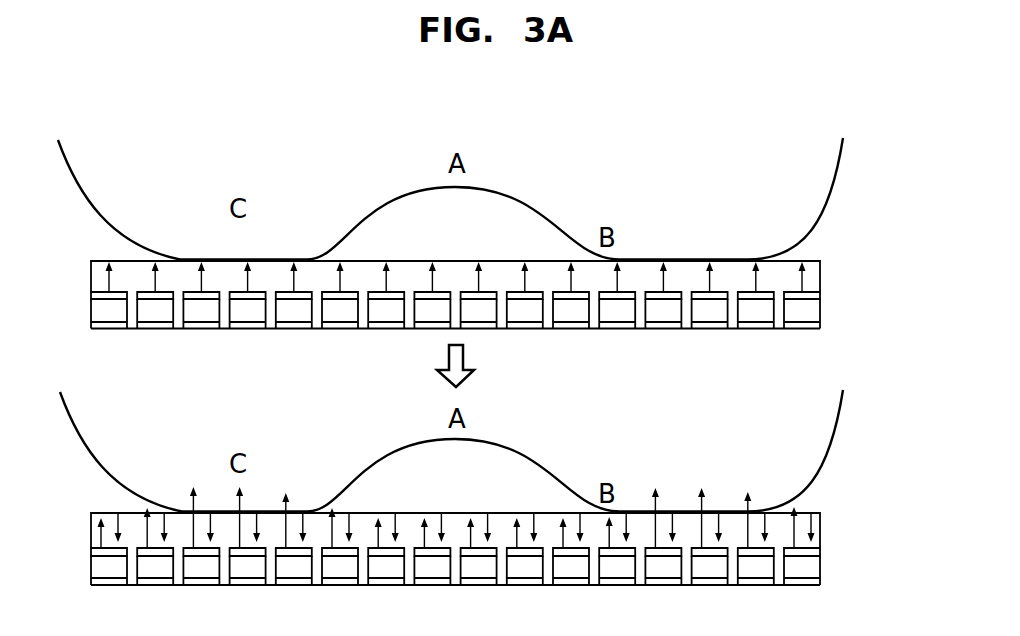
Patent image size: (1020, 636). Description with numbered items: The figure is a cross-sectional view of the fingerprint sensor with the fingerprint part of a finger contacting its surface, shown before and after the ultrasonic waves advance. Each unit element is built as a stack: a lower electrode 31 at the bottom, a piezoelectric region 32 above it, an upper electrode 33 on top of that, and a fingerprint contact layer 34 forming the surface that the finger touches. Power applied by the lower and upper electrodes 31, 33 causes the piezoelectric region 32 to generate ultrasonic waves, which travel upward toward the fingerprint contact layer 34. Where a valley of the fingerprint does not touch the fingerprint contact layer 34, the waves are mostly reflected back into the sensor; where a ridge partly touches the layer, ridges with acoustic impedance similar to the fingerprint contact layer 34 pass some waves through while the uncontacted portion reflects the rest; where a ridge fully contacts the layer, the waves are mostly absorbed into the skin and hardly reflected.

The lower electrode 31 is at (820, 328).
The piezoelectric region 32 is at (820, 312).
The upper electrode 33 is at (820, 293).
The fingerprint contact layer 34 is at (820, 275).